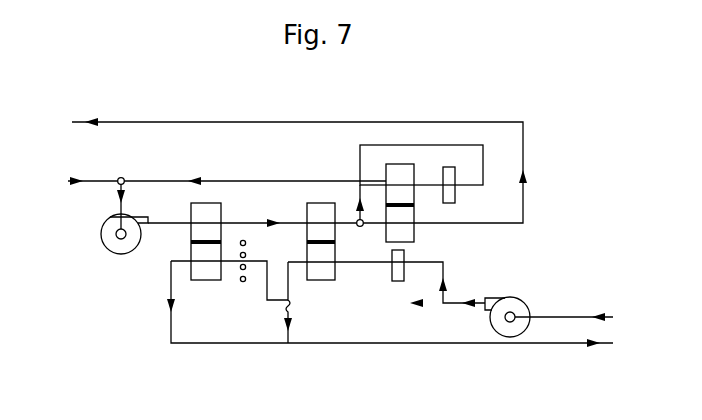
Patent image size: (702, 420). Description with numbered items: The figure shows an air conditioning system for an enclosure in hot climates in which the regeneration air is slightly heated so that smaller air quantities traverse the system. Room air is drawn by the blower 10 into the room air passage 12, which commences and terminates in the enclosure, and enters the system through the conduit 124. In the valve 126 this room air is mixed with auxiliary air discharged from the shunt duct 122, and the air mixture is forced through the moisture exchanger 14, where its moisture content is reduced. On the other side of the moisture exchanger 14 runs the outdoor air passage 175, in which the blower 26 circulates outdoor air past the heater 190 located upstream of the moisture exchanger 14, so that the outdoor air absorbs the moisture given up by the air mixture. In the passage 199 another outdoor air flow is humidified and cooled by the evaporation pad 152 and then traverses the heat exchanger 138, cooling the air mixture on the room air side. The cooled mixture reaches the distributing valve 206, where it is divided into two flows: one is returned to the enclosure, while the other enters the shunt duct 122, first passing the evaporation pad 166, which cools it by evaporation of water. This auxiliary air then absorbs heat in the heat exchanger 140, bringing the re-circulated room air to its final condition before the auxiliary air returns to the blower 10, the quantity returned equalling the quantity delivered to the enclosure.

The room air passage 12 is at (226, 122).
The conduit 124 is at (90, 184).
The valve 126 is at (124, 178).
The blower 10 is at (108, 246).
The moisture exchanger 14 is at (207, 209).
The shunt duct 122 is at (281, 181).
The heat exchanger 138 is at (317, 208).
The heat exchanger 140 is at (400, 172).
The evaporation pad 166 is at (452, 170).
The evaporation pad 152 is at (401, 258).
The heater 190 is at (245, 284).
The outdoor air passage 175 is at (265, 344).
The blower 26 is at (513, 302).
The distributing valve 206 is at (359, 228).
The passage 199 is at (362, 228).